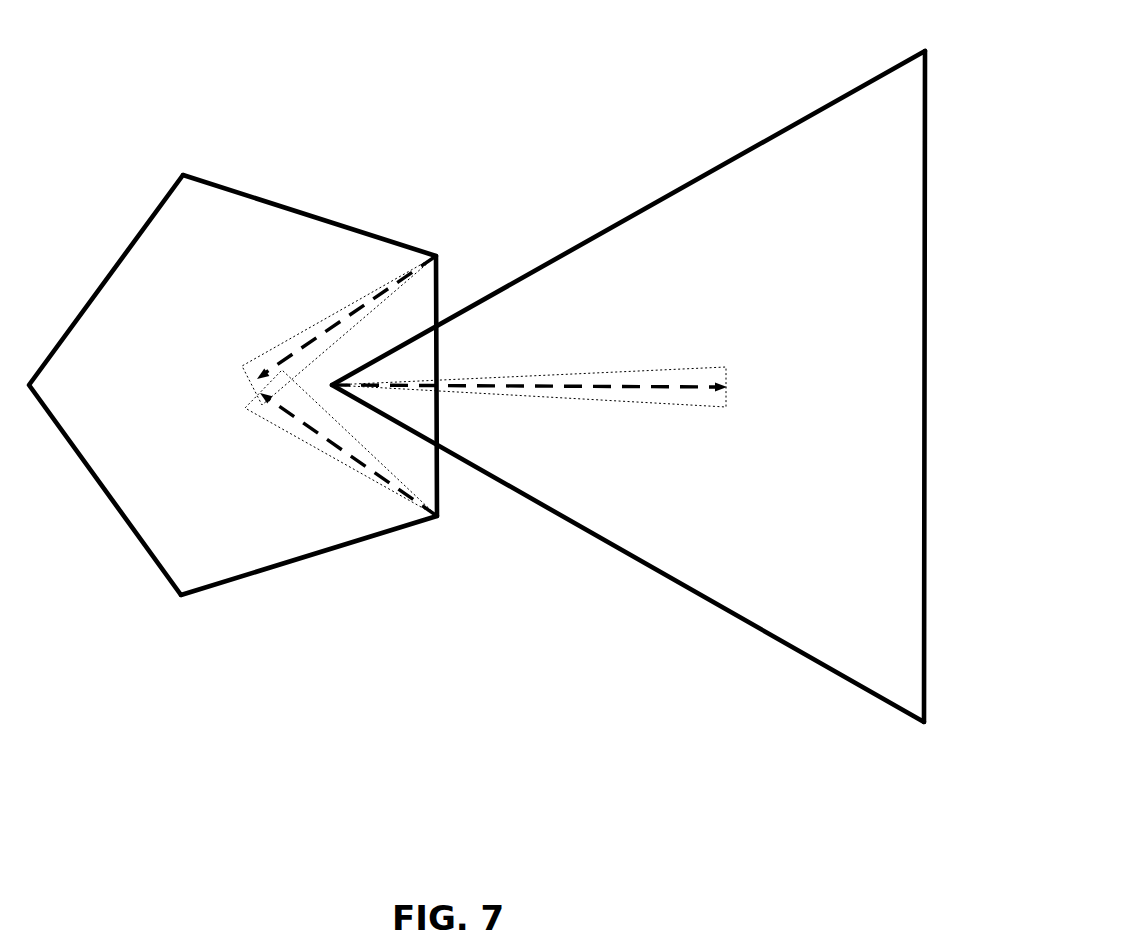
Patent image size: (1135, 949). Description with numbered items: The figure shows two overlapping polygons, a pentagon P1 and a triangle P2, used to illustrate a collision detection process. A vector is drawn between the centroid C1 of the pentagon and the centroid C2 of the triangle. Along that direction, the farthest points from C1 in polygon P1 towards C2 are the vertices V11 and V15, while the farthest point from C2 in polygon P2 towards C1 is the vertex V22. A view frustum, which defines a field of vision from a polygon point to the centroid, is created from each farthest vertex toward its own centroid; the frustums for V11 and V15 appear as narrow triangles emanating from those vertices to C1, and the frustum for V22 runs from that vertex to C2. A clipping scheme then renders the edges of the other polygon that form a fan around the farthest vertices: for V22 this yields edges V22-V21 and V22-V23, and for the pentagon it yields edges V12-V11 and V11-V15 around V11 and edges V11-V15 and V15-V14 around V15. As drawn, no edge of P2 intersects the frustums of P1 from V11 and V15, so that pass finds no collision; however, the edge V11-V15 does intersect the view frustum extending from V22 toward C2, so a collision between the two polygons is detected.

The polygon P1 is at (233, 385).
The polygon P2 is at (628, 386).
The vertex V11 is at (455, 234).
The vertex V12 is at (177, 155).
The vertex V14 is at (196, 611).
The vertex V15 is at (463, 533).
The vertex V21 is at (937, 37).
The vertex V22 is at (313, 398).
The vertex V23 is at (932, 742).
The centroid C1 is at (330, 386).
The centroid C2 is at (560, 387).